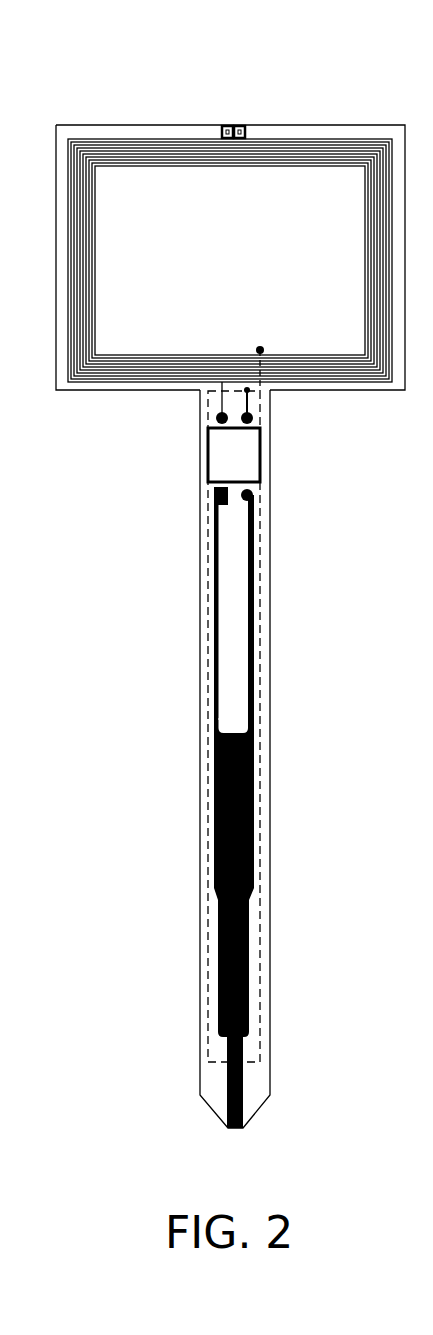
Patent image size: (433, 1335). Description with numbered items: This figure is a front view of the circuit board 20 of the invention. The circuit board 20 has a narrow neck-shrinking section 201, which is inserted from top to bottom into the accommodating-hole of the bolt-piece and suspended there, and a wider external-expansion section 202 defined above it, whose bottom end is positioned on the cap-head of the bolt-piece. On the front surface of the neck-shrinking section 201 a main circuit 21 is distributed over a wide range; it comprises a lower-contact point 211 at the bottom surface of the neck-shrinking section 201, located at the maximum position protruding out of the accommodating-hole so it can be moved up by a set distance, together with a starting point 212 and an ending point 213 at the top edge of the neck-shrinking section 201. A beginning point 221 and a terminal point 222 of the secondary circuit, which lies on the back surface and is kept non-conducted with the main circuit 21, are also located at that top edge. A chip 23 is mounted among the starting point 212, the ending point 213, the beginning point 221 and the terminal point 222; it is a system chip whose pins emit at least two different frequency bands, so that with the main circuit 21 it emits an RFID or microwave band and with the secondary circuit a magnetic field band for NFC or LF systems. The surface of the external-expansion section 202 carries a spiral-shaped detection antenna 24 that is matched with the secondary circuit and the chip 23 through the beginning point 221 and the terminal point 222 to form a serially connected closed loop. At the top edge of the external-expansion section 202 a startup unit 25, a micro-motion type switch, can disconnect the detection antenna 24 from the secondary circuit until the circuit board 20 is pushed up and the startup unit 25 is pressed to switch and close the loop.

The circuit board 20 is at (167, 635).
The neck-shrinking section 201 is at (270, 750).
The external-expansion section 202 is at (90, 125).
The main circuit 21 is at (218, 650).
The lower-contact point 211 is at (228, 1127).
The starting point 212 is at (224, 503).
The ending point 213 is at (252, 495).
The beginning point 221 is at (218, 417).
The terminal point 222 is at (252, 416).
The chip 23 is at (211, 458).
The detection antenna 24 is at (93, 307).
The startup unit 25 is at (246, 125).